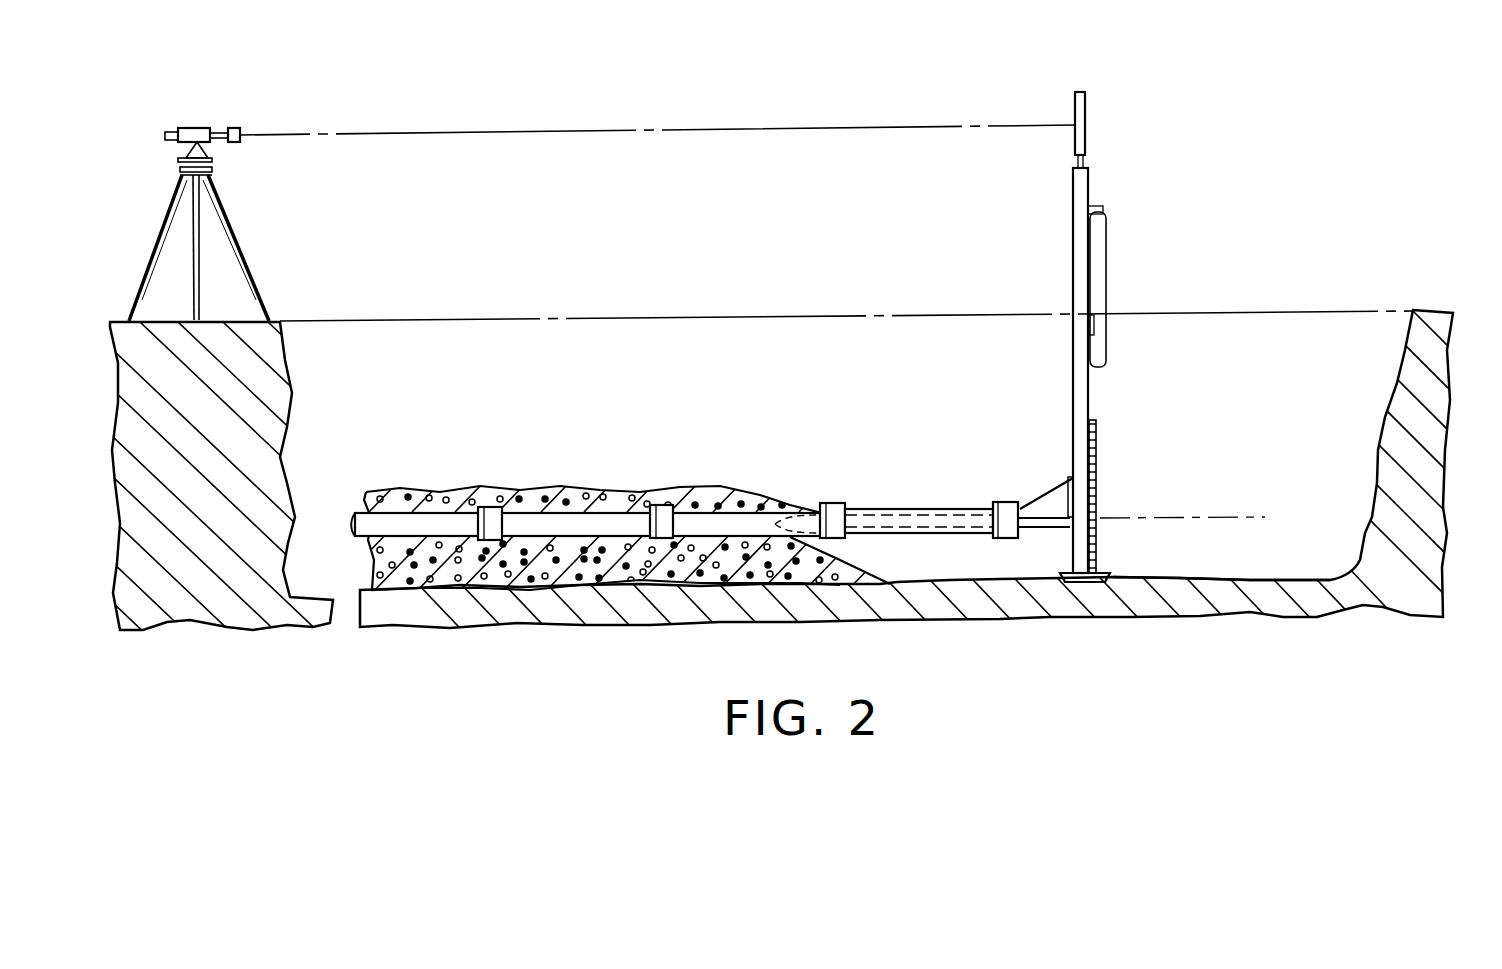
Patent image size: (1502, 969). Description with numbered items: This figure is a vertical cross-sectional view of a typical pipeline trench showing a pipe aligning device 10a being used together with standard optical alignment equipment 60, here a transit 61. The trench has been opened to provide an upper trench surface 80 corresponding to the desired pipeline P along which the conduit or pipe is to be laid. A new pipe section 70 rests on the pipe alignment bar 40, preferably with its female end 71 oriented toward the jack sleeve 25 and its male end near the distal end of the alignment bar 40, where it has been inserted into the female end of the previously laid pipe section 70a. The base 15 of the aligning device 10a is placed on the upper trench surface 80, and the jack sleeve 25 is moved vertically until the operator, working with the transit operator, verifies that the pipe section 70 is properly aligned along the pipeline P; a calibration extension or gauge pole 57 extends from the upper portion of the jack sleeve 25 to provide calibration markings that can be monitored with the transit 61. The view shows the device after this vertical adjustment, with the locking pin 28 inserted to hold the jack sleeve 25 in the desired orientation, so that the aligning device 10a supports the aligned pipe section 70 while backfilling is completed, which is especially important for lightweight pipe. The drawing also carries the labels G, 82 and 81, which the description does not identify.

The transit 61 is at (196, 128).
The optical alignment equipment 60 is at (250, 112).
The gauge pole 57 is at (1102, 121).
The locking pin 28 is at (1073, 215).
The ground grade line G is at (602, 317).
The jack sleeve 25 is at (1075, 383).
The pipe aligning device 10a is at (1111, 331).
The gravel bedding 82 is at (547, 490).
The previously layed pipe section 70a is at (802, 512).
The pipe alignment bar 40 is at (888, 512).
The pipe section 70 is at (960, 509).
The female end 71 is at (1008, 502).
The pipeline P is at (1218, 512).
The base 15 is at (1063, 573).
The upper trench surface 80 is at (1188, 578).
The trench floor 81 is at (512, 620).